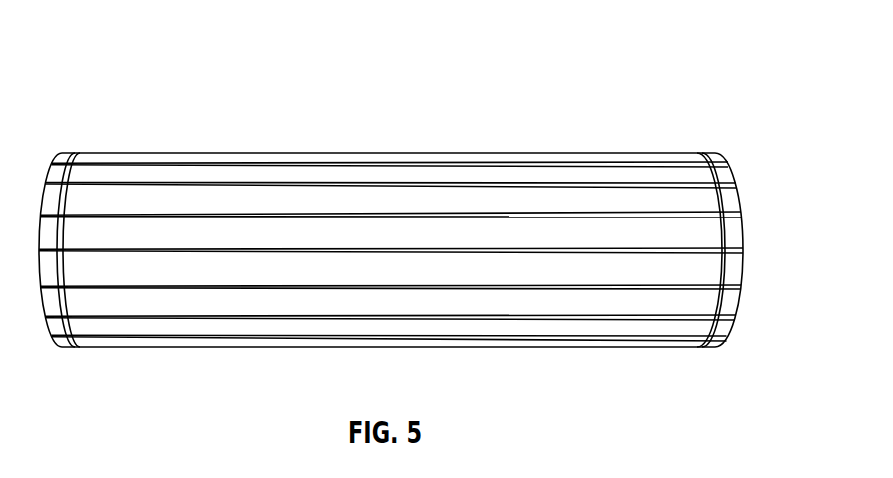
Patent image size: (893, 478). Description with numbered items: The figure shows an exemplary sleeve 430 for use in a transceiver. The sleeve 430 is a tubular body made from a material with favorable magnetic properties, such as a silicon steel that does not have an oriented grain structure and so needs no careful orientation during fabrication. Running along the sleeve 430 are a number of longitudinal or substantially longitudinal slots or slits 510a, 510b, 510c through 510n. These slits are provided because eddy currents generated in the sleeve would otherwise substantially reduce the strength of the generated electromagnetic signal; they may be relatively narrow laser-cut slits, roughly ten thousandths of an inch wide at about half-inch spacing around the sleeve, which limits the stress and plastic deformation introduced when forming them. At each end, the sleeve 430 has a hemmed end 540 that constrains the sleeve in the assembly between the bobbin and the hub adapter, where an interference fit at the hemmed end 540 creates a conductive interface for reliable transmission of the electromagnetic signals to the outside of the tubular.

The sleeve 430 is at (245, 177).
The hemmed end 540 is at (97, 157).
The longitudinal slit 510n is at (392, 167).
The longitudinal slit 510a is at (508, 213).
The longitudinal slit 510b is at (568, 250).
The longitudinal slit 510c is at (543, 285).